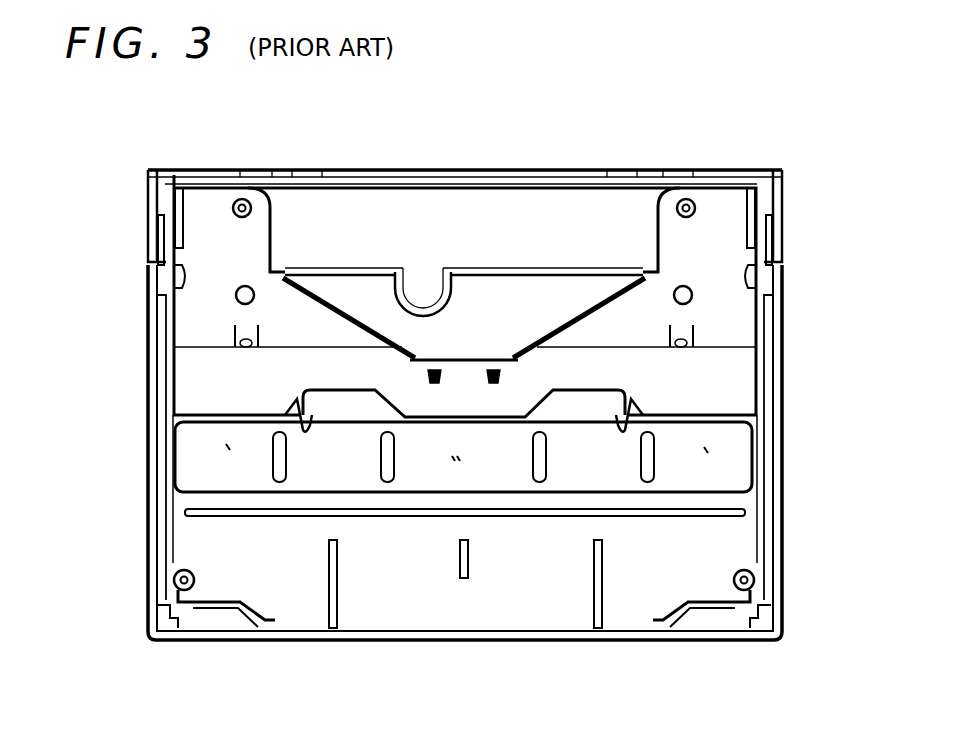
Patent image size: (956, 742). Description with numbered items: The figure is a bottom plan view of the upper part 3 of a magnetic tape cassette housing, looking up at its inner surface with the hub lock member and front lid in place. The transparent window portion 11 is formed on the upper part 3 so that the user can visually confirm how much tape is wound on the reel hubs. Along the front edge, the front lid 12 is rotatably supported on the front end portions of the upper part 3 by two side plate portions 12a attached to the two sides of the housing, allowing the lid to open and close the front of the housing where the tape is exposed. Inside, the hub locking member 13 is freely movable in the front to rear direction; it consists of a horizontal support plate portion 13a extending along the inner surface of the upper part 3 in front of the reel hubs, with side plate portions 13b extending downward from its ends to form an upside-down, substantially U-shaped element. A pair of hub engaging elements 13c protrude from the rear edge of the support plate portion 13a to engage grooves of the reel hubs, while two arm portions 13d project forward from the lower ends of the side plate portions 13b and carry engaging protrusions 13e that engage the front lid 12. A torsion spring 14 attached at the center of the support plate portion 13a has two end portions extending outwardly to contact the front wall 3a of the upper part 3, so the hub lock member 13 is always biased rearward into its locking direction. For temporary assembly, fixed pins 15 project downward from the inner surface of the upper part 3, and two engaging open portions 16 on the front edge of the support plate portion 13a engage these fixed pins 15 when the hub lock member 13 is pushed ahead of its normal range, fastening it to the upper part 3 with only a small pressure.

The upper part 3 is at (583, 643).
The front wall 3a is at (488, 270).
The transparent window portion 11 is at (708, 473).
The front lid 12 is at (436, 168).
The side plate portions 12a is at (150, 185).
The hub locking member 13 is at (450, 418).
The horizontal support plate portion 13a is at (492, 400).
The side plate portions 13b is at (168, 382).
The hub engaging elements 13c is at (305, 432).
The arm portions 13d is at (166, 308).
The engaging protrusions 13e is at (160, 222).
The torsion spring 14 is at (368, 318).
The fixed pins 15 is at (245, 290).
The engaging convex open portions 16 is at (240, 345).